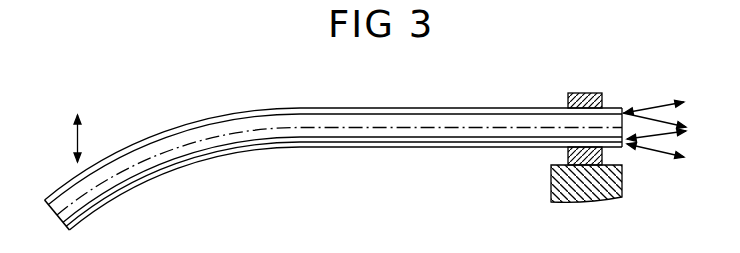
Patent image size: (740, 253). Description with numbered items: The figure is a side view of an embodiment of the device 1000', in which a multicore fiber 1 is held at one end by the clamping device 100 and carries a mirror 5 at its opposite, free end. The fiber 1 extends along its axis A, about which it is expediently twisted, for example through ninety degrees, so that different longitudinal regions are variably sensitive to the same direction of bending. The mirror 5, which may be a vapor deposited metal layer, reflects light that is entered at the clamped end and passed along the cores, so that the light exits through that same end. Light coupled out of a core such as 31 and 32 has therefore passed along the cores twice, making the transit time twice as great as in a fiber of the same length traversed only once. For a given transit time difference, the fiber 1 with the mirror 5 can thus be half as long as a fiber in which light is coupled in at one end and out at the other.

The multicore fiber 1 is at (338, 108).
The core 31 is at (404, 116).
The core 32 is at (421, 138).
The axis A is at (245, 130).
The mirror 5 is at (45, 200).
The clamp 100 is at (590, 93).
The device 1000' is at (580, 95).